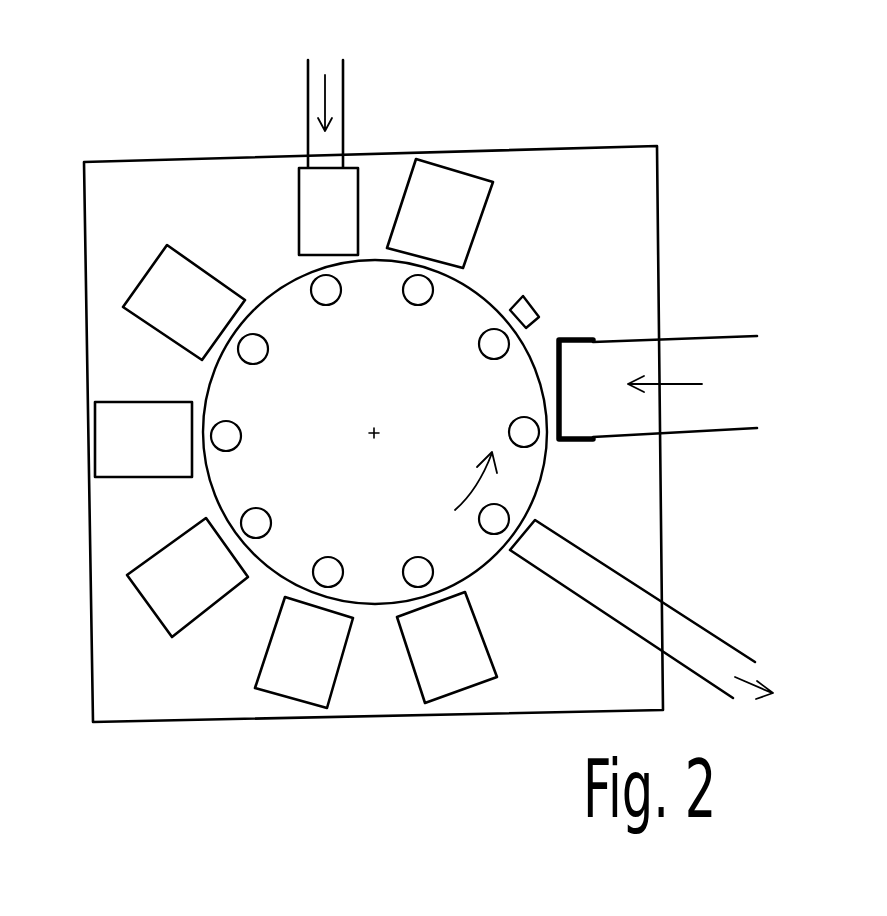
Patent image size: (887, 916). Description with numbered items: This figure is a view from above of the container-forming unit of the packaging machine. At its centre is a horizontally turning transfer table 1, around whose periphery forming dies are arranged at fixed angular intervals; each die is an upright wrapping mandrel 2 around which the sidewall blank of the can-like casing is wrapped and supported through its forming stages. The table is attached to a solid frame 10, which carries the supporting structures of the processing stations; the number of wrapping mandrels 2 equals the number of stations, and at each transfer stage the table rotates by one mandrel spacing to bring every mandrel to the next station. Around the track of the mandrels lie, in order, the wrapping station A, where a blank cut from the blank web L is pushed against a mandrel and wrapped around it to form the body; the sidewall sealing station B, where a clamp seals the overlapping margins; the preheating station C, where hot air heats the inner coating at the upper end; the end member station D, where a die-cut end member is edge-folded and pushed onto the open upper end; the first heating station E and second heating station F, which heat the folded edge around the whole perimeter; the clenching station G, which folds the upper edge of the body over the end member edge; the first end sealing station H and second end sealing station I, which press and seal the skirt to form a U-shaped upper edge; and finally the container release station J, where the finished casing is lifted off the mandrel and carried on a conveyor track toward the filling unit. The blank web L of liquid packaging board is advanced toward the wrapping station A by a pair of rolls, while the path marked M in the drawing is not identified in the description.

The transfer table 1 is at (277, 297).
The wrapping mandrel 2 is at (258, 355).
The frame 10 is at (640, 257).
The wrapping station A is at (577, 333).
The sidewall sealing station B is at (530, 298).
The preheating station C is at (445, 183).
The end member station D is at (343, 193).
The first heating station E is at (160, 283).
The second heating station F is at (123, 432).
The clenching station G is at (163, 588).
The first end sealing station H is at (295, 680).
The second end sealing station I is at (445, 677).
The container release station J is at (557, 532).
The blank web L is at (722, 412).
The supply conveyor M is at (337, 88).